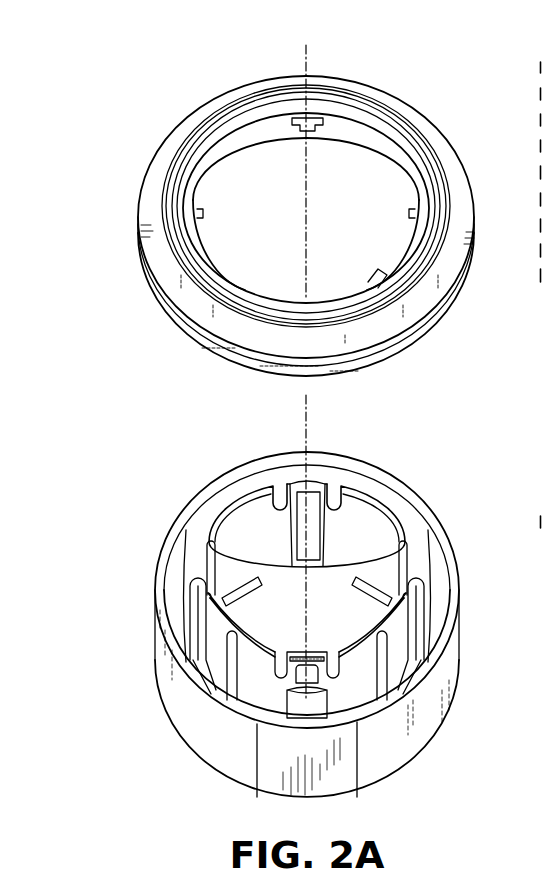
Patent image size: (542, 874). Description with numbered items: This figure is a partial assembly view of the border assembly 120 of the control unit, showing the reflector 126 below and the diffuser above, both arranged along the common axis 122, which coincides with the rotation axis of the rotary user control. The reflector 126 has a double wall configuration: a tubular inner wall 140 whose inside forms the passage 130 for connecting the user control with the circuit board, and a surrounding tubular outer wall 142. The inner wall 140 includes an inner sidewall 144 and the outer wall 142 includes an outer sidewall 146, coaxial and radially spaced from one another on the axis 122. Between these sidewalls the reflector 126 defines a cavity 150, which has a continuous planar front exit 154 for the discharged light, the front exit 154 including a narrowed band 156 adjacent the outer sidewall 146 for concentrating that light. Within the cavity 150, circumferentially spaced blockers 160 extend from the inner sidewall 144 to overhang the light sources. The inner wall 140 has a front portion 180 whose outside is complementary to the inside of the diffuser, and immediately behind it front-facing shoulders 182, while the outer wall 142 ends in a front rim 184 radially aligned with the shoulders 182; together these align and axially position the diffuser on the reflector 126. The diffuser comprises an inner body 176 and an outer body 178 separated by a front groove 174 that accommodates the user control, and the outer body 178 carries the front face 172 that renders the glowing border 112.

The border assembly 120 is at (253, 210).
The passage 130 is at (270, 170).
The front face 172 is at (253, 226).
The border 112 is at (187, 130).
The inner body 176 is at (202, 160).
The front groove 174 is at (180, 181).
The outer body 178 is at (163, 208).
The axis 122 is at (267, 589).
The reflector 126 is at (157, 652).
The front rim 184 is at (253, 460).
The front portion 180 is at (245, 475).
The outer wall 142 is at (197, 490).
The inner wall 140 is at (220, 517).
The inner sidewall 144 is at (207, 537).
The outer sidewall 146 is at (168, 578).
The front-facing shoulders 182 is at (192, 598).
The blockers 160 is at (200, 628).
The cavity 150 is at (178, 656).
The front exit 154 is at (193, 673).
The narrowed band 156 is at (201, 687).